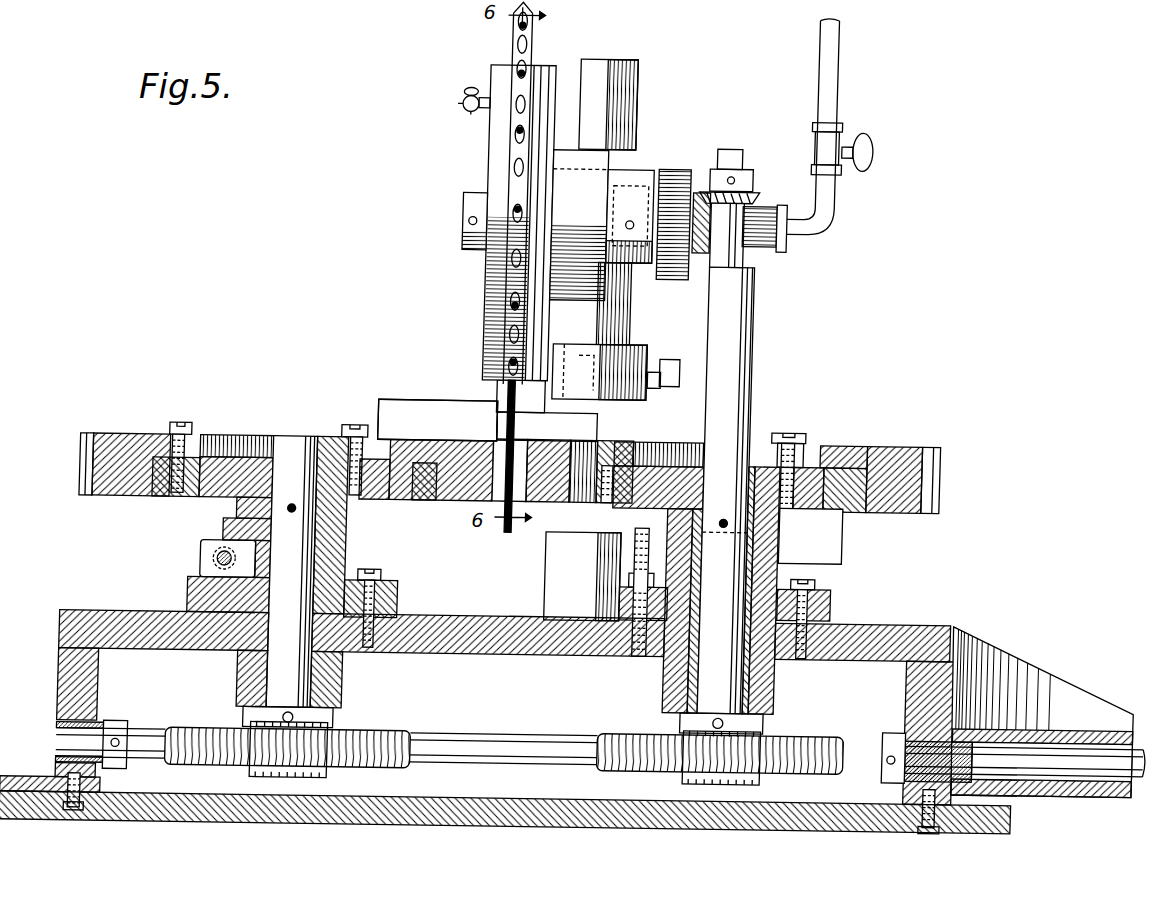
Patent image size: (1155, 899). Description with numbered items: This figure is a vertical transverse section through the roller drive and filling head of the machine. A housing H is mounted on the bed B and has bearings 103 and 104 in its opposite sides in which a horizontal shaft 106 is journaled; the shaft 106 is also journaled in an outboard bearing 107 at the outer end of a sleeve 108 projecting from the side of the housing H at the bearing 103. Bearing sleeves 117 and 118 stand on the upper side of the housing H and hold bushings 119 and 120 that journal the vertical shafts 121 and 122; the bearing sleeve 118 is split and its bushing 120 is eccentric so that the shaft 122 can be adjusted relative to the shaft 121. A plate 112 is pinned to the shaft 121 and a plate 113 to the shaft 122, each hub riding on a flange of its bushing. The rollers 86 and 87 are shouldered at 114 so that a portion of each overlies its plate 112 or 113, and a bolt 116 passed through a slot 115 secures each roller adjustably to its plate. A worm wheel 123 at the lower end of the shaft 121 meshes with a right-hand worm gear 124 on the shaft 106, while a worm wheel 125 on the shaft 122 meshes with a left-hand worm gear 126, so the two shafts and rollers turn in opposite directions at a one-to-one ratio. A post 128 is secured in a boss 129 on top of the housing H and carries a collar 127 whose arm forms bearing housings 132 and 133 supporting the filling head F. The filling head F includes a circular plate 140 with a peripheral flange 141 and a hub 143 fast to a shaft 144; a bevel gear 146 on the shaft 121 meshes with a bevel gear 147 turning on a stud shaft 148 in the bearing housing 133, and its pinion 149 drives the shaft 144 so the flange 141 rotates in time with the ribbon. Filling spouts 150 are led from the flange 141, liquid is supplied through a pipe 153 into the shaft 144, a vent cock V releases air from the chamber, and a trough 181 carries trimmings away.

The roller 87 is at (128, 441).
The bolt 116 is at (178, 429).
The slot 115 is at (196, 465).
The plate 113 is at (239, 450).
The shaft 122 is at (289, 459).
The bushing 120 is at (226, 533).
The bearing sleeve 118 is at (207, 565).
The shoulder 114 is at (413, 500).
The plate 112 is at (819, 461).
The roller 86 is at (893, 442).
The shaft 121 is at (742, 392).
The bushing 119 is at (781, 540).
The bearing sleeve 117 is at (784, 562).
The boss 129 is at (550, 570).
The housing H is at (123, 617).
The bed B is at (463, 802).
The sleeve 108 is at (1101, 787).
The bearing 103 is at (919, 740).
The outboard bearing 107 is at (1133, 772).
The bearing 104 is at (116, 729).
The worm wheel 125 is at (401, 722).
The worm gear 126 is at (265, 777).
The shaft 106 is at (490, 741).
The worm wheel 123 is at (814, 731).
The worm gear 124 is at (753, 787).
The trough 181 is at (414, 407).
The circular plate 140 is at (478, 138).
The filling head F is at (538, 62).
The peripheral flange 141 is at (486, 66).
The filling spout 150 is at (514, 30).
The vent cock V is at (457, 98).
The hub 143 is at (461, 196).
The bearing housing 132 is at (575, 150).
The post 128 is at (556, 190).
The bearing housing 133 is at (601, 189).
The collar 127 is at (671, 168).
The pinion 149 is at (684, 175).
The bevel gear 147 is at (695, 261).
The bevel gear 146 is at (748, 170).
The shaft 144 is at (752, 212).
The stud shaft 148 is at (771, 247).
The pipe 153 is at (828, 63).